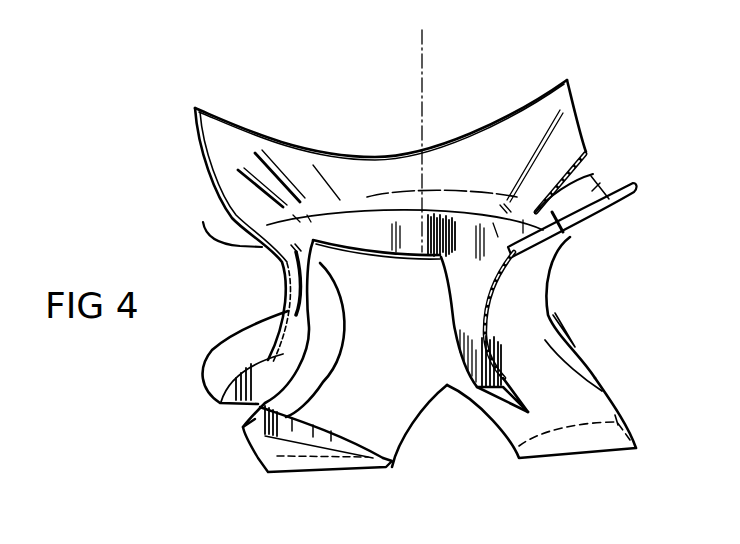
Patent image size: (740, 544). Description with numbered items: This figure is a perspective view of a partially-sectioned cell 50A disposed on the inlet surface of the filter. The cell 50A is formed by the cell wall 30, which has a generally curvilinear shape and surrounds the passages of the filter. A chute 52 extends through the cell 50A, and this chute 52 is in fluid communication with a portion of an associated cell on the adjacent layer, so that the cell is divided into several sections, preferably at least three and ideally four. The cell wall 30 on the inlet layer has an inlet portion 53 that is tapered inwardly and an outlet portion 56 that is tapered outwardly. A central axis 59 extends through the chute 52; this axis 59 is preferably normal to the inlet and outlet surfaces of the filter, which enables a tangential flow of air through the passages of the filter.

The wall 30 is at (533, 289).
The cell 50A is at (203, 222).
The chute 52 is at (343, 172).
The inlet portion 53 is at (596, 176).
The outlet portion 56 is at (600, 383).
The central axis 59 is at (423, 111).